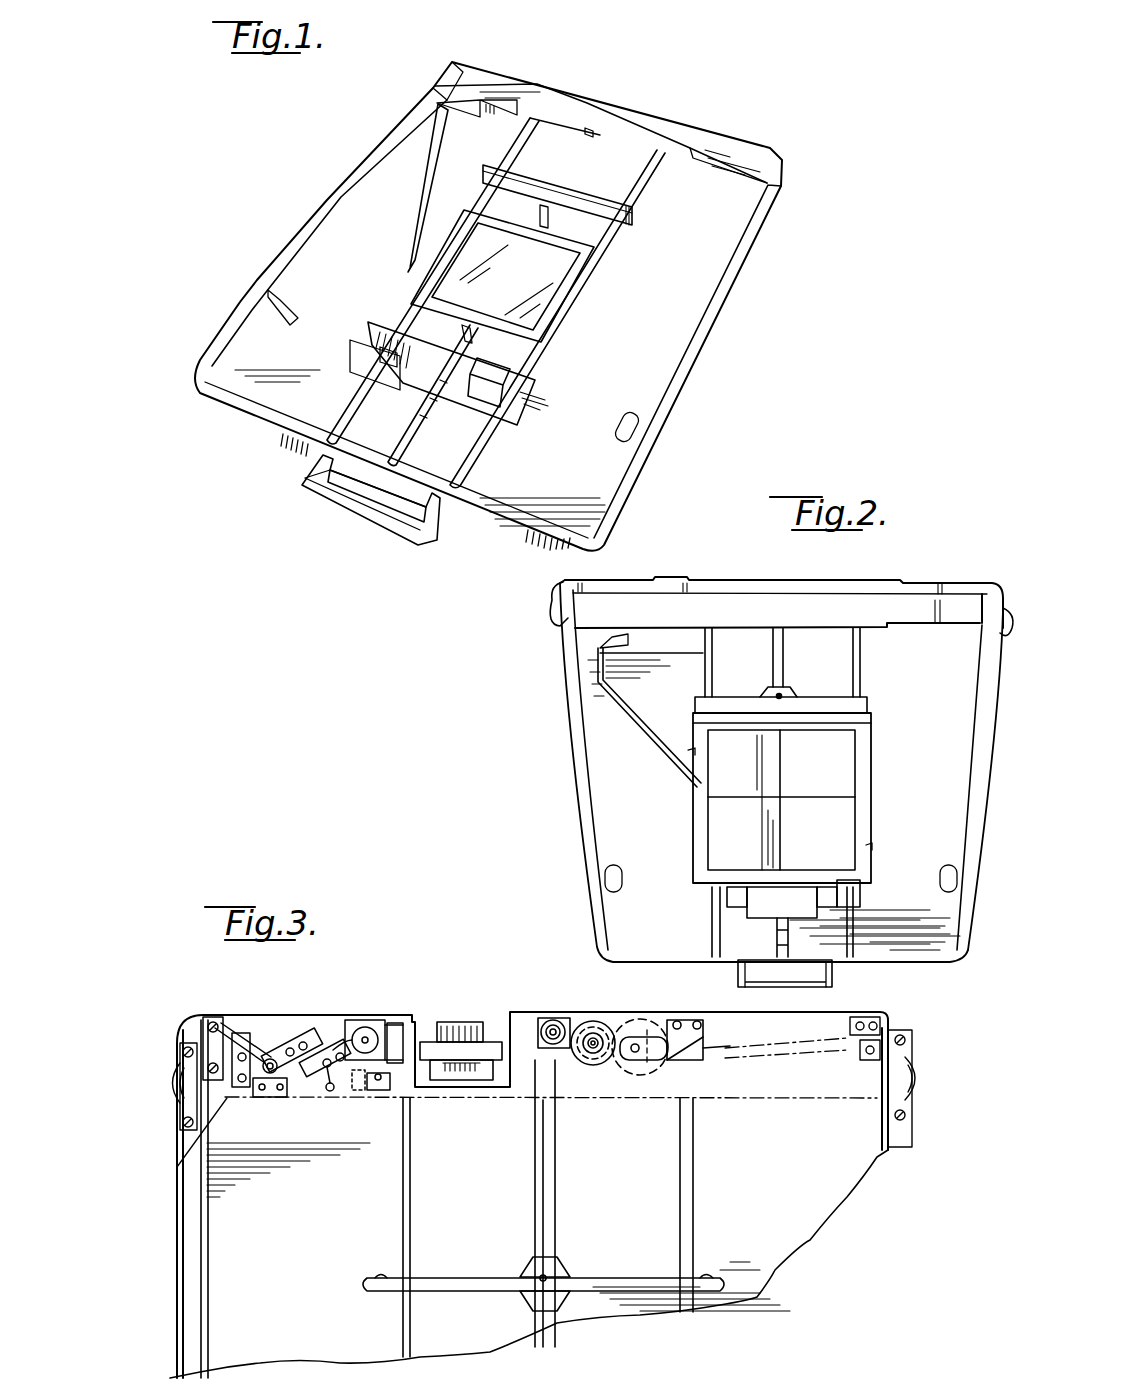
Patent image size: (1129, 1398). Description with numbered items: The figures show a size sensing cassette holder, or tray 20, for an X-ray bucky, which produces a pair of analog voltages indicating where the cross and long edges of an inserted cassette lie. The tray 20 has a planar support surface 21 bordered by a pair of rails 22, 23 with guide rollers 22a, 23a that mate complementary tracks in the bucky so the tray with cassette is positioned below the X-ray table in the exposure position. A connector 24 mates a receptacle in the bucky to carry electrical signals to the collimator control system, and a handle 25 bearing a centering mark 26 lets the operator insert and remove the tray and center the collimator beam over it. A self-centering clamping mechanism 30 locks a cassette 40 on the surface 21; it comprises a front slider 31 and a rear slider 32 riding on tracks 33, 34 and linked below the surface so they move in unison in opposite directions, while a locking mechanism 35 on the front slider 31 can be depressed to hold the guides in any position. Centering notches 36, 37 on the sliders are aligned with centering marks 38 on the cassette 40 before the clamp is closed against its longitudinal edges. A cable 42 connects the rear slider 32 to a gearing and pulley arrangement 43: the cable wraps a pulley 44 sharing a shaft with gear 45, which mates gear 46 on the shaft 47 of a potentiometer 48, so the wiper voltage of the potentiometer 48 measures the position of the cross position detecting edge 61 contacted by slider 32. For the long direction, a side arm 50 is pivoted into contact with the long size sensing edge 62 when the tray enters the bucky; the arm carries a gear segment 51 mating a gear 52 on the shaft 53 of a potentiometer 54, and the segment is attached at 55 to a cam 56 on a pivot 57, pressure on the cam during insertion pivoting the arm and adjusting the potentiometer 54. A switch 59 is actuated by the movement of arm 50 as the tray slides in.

In FIG. 1, the size sensing cassette holder 20 is at (707, 111).
In FIG. 1, the planar support surface 21 is at (738, 243).
In FIG. 1, the rail 22 is at (327, 202).
In FIG. 2, the rail 22 is at (577, 822).
In FIG. 2, the guide roller 22a is at (550, 616).
In FIG. 1, the rail 23 is at (700, 366).
In FIG. 2, the rail 23 is at (993, 740).
In FIG. 2, the guide roller 23a is at (1003, 613).
In FIG. 2, the connector 24 is at (720, 585).
In FIG. 3, the connector 24 is at (467, 1026).
In FIG. 1, the handle 25 is at (402, 532).
In FIG. 1, the centering mark 26 is at (352, 510).
In FIG. 1, the clamping mechanism 30 is at (626, 248).
In FIG. 1, the front slider 31 is at (502, 432).
In FIG. 1, the rear slider 32 is at (635, 212).
In FIG. 3, the rear slider 32 is at (660, 1257).
In FIG. 1, the track 33 is at (407, 305).
In FIG. 1, the track 34 is at (548, 335).
In FIG. 1, the locking mechanism 35 is at (452, 402).
In FIG. 2, the centering notch 36 is at (750, 892).
In FIG. 2, the centering notch 37 is at (780, 714).
In FIG. 2, the centering marks 38 is at (782, 764).
In FIG. 2, the cassette 40 is at (866, 763).
In FIG. 3, the cable 42 is at (545, 1178).
In FIG. 3, the gearing and pulley arrangement 43 is at (580, 1003).
In FIG. 3, the pulley 44 is at (587, 1068).
In FIG. 3, the gear 45 is at (597, 1027).
In FIG. 3, the gear 46 is at (617, 1067).
In FIG. 3, the shaft 47 is at (637, 1043).
In FIG. 3, the potentiometer 48 is at (608, 1030).
In FIG. 1, the side arm 50 is at (407, 236).
In FIG. 3, the side arm 50 is at (183, 1222).
In FIG. 3, the gear segment 51 is at (330, 1093).
In FIG. 3, the gear 52 is at (363, 1026).
In FIG. 3, the shaft 53 is at (380, 1040).
In FIG. 3, the potentiometer 54 is at (395, 1025).
In FIG. 3, the attachment point 55 is at (325, 1050).
In FIG. 3, the cam 56 is at (308, 1034).
In FIG. 3, the pivot 57 is at (276, 1025).
In FIG. 3, the switch 59 is at (383, 1097).
In FIG. 2, the cross position detecting edge 61 is at (840, 712).
In FIG. 2, the long size sensing edge 62 is at (695, 820).